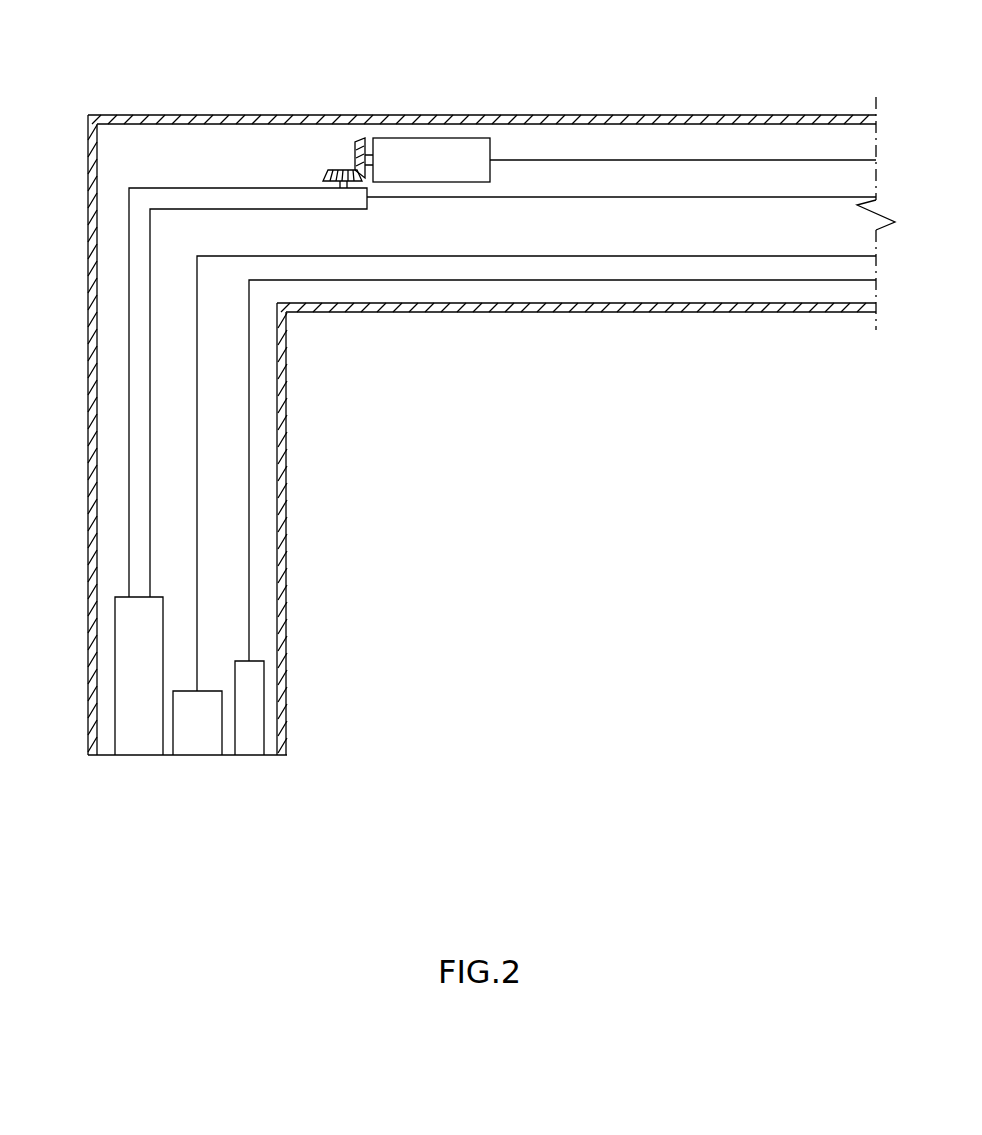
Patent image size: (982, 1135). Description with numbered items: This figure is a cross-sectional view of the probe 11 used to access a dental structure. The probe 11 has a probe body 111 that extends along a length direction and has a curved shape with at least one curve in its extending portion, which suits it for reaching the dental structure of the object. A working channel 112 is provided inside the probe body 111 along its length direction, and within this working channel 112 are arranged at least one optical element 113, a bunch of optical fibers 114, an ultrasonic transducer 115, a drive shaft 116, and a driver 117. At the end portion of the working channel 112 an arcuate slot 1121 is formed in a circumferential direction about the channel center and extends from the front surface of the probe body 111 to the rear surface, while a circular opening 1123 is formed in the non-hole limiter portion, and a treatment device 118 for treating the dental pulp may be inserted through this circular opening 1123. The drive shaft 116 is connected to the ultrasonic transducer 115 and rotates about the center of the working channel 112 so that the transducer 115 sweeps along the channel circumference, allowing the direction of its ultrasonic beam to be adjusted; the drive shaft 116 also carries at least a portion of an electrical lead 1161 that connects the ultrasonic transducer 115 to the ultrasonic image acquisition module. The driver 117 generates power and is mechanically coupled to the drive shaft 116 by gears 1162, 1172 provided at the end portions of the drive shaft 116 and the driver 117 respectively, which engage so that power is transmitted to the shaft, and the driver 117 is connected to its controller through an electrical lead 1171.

The probe 11 is at (492, 87).
The probe body 111 is at (618, 312).
The working channel 112 is at (402, 267).
The arcuate slot 1121 is at (116, 755).
The circular opening 1123 is at (268, 755).
The optical element 113 is at (198, 745).
The bunch of optical fibers 114 is at (198, 400).
The ultrasonic transducer 115 is at (141, 745).
The drive shaft 116 is at (130, 393).
The electrical lead 1161 is at (485, 198).
The gear 1162 is at (332, 174).
The driver 117 is at (430, 137).
The electrical lead 1171 is at (605, 157).
The gear 1172 is at (364, 140).
The treatment device 118 is at (247, 745).